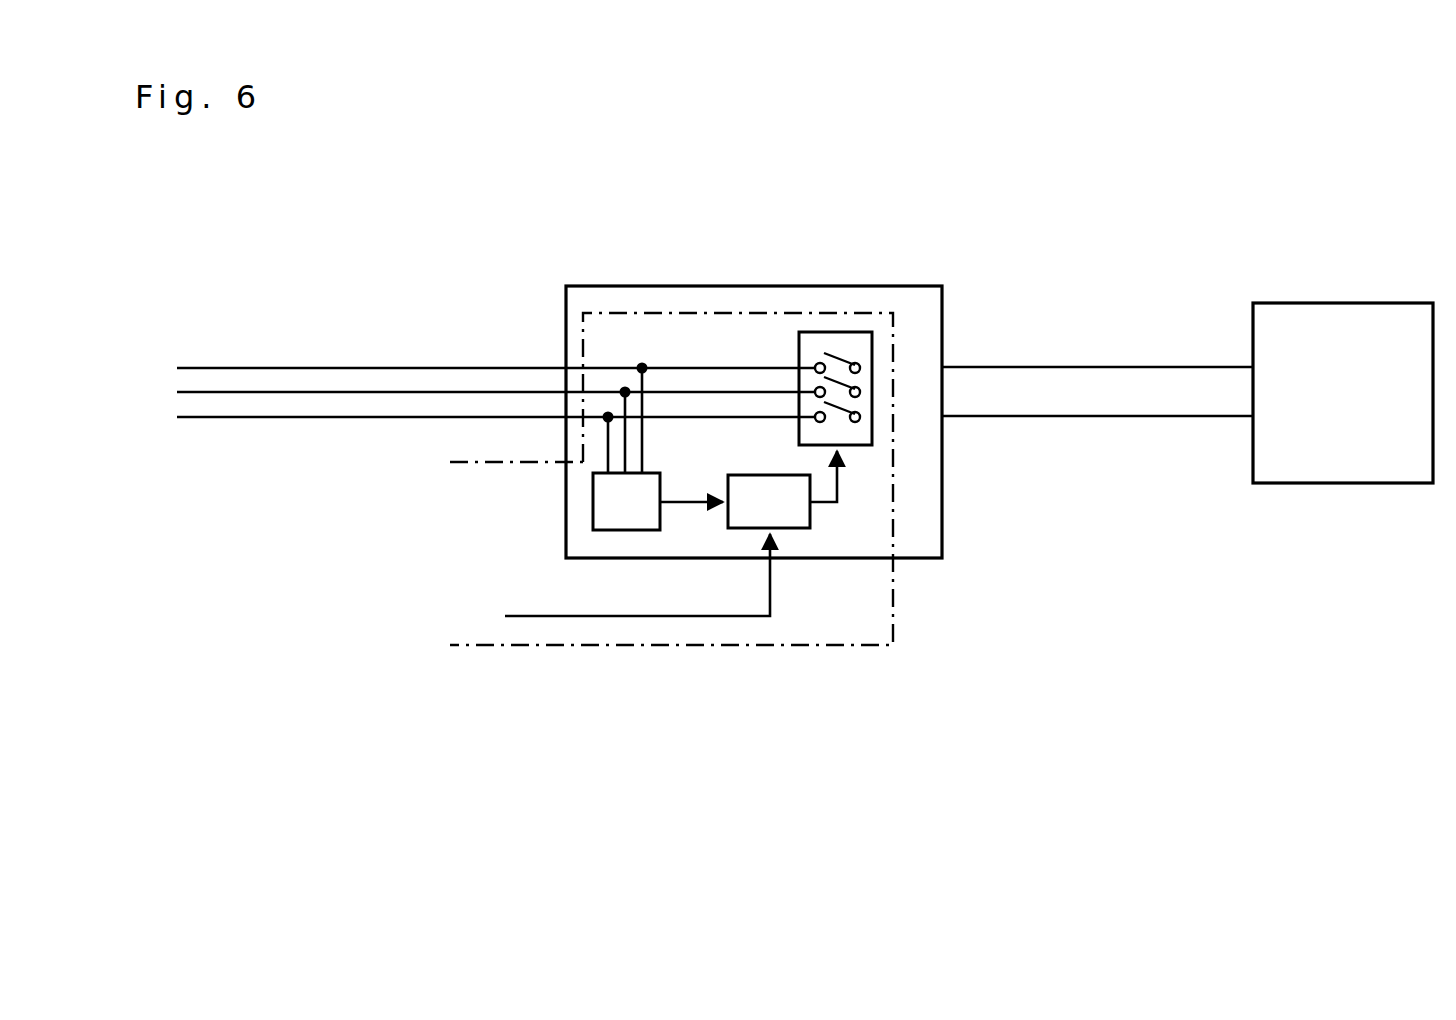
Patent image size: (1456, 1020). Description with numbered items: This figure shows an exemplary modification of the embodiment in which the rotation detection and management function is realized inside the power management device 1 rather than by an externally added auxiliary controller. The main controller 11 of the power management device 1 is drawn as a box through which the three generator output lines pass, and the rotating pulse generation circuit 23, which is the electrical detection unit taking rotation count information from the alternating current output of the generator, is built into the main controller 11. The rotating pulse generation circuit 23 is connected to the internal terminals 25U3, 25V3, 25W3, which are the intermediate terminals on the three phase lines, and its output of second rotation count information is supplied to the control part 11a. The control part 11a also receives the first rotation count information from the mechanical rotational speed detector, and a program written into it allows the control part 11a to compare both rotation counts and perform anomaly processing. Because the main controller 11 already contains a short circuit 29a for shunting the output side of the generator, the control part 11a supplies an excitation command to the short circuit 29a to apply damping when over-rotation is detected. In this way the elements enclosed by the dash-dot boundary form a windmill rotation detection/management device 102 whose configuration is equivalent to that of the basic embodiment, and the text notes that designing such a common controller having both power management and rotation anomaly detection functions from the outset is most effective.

The power management device 1 is at (806, 266).
The main controller 11 is at (758, 285).
The control part 11a is at (812, 520).
The rotating pulse generation circuit 23 is at (593, 499).
The internal terminal 25U3 is at (642, 368).
The internal terminal 25V3 is at (623, 390).
The internal terminal 25W3 is at (608, 415).
The short circuit 29a is at (875, 352).
The windmill rotation detection/management device 102 is at (612, 655).